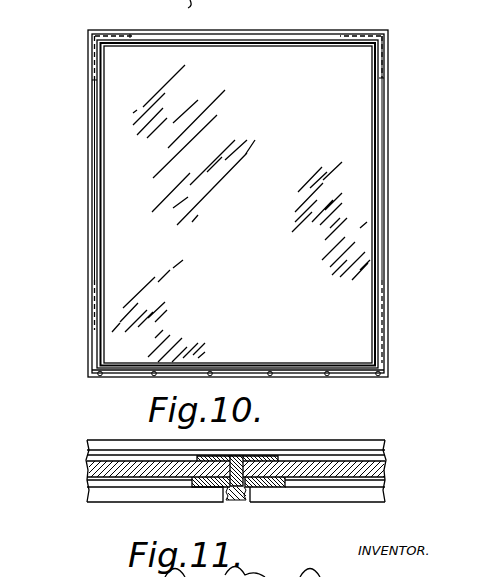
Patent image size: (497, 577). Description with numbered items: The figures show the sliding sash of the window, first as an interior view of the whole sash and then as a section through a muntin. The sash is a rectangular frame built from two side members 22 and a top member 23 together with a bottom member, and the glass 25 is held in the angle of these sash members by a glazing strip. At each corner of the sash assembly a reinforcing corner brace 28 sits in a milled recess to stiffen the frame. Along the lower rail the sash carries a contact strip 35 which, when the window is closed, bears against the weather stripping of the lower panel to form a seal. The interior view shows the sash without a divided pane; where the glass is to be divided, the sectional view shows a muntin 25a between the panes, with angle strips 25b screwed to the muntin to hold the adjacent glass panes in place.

In FIG. 10, the side members 22 is at (386, 152).
In FIG. 10, the top member 23 is at (253, 42).
In FIG. 10, the glass 25 is at (241, 213).
In FIG. 10, the reinforcing corner braces 28 is at (93, 57).
In FIG. 10, the contact strip 35 is at (125, 370).
In FIG. 11, the muntins 25a is at (242, 457).
In FIG. 11, the angle strips 25b is at (213, 487).